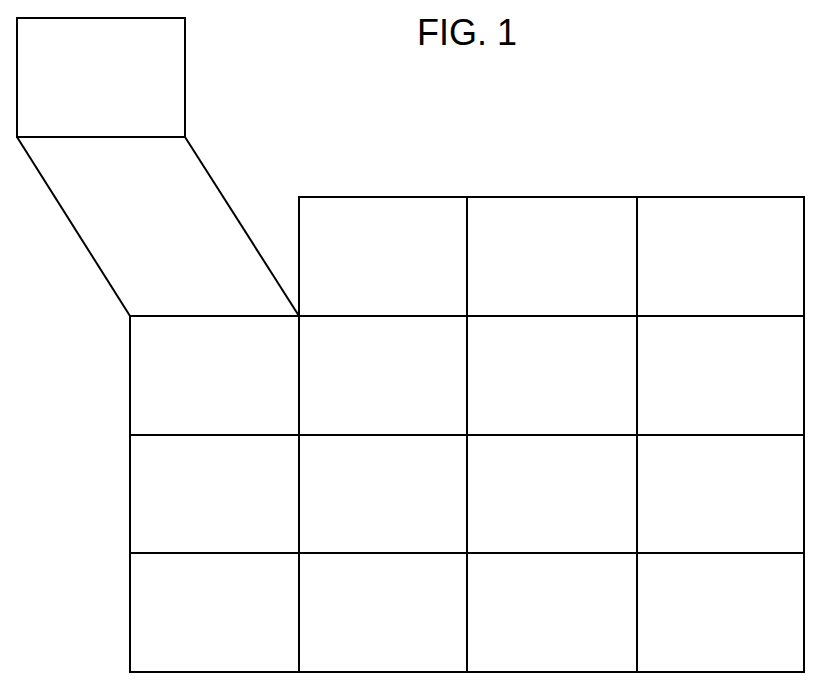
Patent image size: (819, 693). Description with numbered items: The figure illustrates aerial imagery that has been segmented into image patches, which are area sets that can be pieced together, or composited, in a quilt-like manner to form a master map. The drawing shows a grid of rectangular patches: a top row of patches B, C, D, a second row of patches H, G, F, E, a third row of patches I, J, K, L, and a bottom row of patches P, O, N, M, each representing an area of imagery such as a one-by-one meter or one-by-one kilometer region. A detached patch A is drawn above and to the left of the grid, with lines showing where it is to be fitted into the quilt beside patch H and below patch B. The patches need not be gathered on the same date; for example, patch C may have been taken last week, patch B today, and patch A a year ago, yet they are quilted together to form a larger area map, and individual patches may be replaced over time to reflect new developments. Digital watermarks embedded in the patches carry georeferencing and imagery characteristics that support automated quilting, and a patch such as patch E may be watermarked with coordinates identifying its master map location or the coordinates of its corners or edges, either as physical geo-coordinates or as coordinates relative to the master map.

The Patch A is at (158, 167).
The Patch B is at (383, 256).
The Patch C is at (552, 256).
The image patch D is at (720, 256).
The patch E is at (720, 375).
The image patch F is at (552, 375).
The image patch G is at (383, 375).
The image patch H is at (214, 375).
The image patch I is at (214, 494).
The image patch J is at (383, 494).
The image patch K is at (552, 494).
The image patch L is at (720, 494).
The image patch M is at (720, 612).
The image patch N is at (552, 612).
The image patch O is at (383, 612).
The image patch P is at (214, 612).